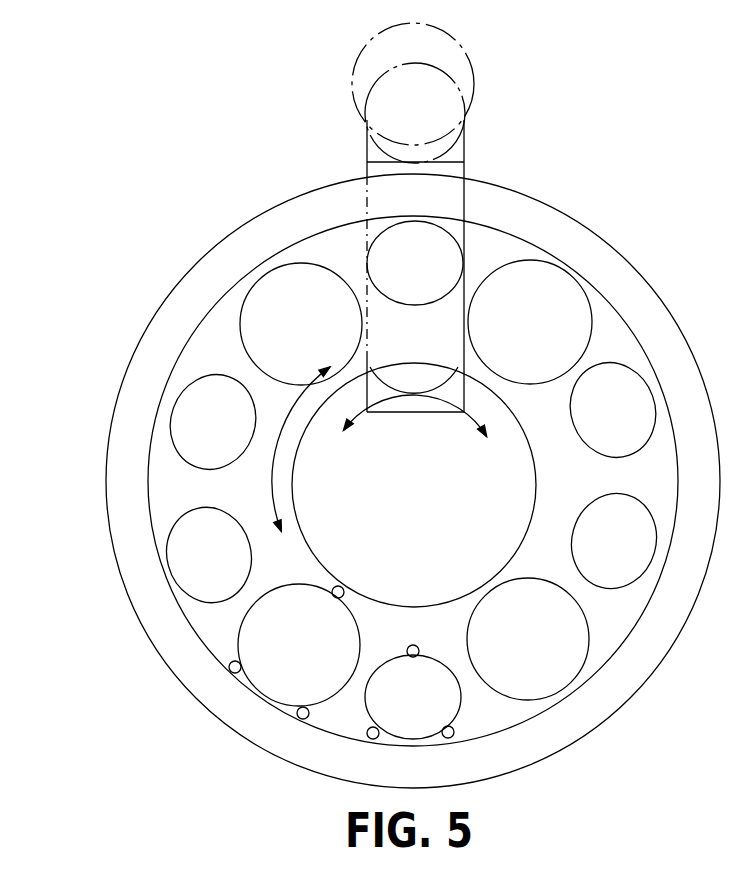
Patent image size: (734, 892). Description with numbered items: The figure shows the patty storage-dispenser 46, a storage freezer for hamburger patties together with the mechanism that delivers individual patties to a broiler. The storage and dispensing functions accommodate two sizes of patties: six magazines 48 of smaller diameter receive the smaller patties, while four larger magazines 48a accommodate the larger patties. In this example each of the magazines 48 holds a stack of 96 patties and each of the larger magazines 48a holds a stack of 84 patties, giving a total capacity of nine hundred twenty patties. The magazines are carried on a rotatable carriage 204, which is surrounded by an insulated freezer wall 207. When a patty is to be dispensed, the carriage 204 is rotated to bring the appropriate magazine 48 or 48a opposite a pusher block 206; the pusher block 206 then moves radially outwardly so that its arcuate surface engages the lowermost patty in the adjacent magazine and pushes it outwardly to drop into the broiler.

The carriage 204 is at (383, 478).
The insulated freezer wall 207 is at (283, 205).
The patty storage-dispenser 46 is at (628, 333).
The pusher block 206 is at (404, 414).
The patties held in larger magazine 84 is at (313, 329).
The patties held in smaller magazine 96 is at (426, 247).
The magazines 48 is at (460, 252).
The larger magazines 48a is at (265, 276).